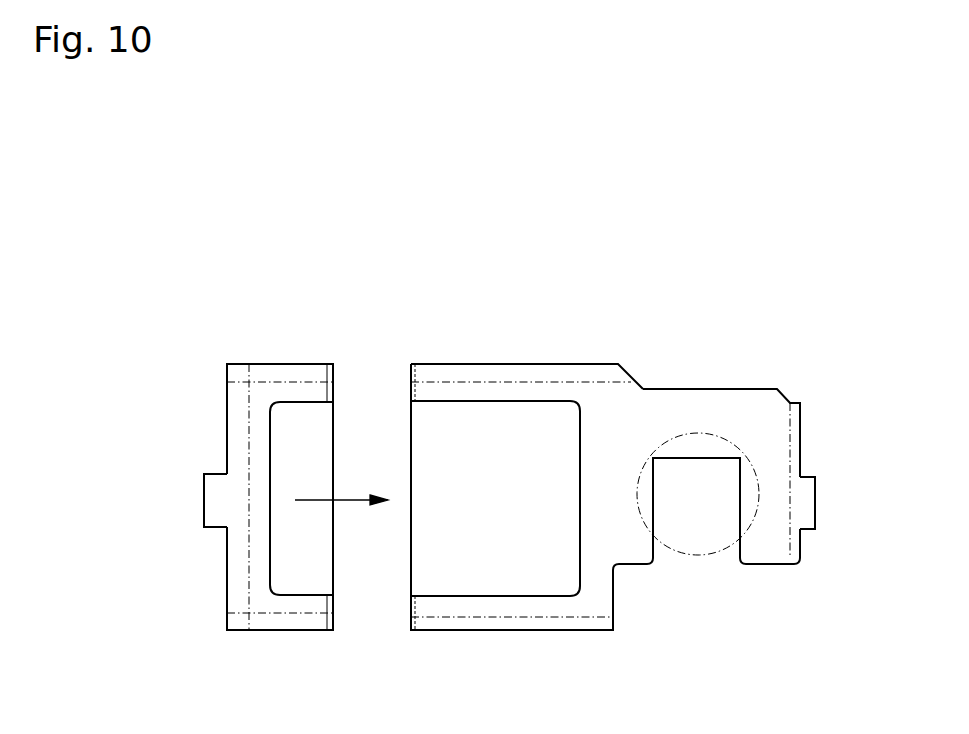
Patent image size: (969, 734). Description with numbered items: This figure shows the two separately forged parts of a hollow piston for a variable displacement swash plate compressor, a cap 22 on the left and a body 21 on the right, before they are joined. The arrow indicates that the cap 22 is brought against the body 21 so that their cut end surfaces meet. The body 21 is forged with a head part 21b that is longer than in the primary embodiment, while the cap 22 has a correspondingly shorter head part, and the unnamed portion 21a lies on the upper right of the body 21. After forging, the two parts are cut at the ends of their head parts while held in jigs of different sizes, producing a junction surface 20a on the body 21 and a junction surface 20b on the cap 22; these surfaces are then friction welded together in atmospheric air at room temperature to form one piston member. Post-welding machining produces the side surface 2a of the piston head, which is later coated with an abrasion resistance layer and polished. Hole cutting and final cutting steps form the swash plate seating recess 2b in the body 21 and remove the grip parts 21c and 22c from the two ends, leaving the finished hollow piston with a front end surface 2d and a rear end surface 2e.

The cap 22 is at (248, 350).
The grip part 22c is at (210, 500).
The front end surface 2d is at (249, 422).
The junction surface 20b is at (330, 374).
The junction surface 20a is at (414, 390).
The body 21 is at (704, 375).
The head part 21b is at (583, 374).
The side surface 2a is at (532, 382).
The side portion of first connection terminal 21a is at (752, 417).
The grip part 21c is at (808, 505).
The rear end surface 2e is at (792, 452).
The swash plate seating recess 2b is at (698, 518).